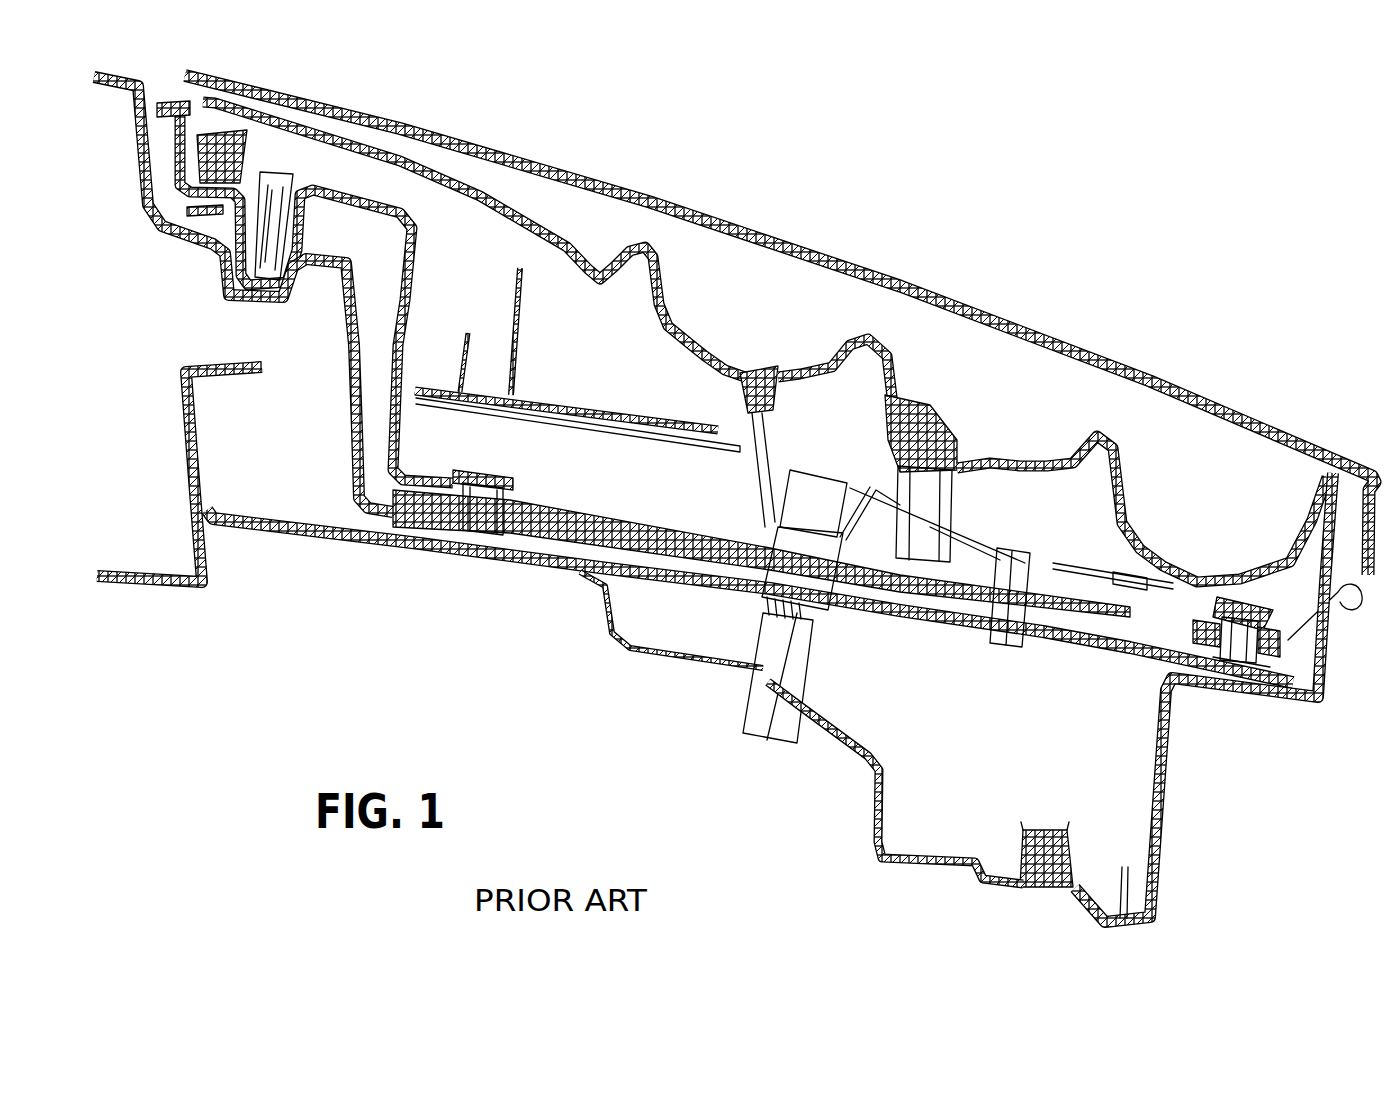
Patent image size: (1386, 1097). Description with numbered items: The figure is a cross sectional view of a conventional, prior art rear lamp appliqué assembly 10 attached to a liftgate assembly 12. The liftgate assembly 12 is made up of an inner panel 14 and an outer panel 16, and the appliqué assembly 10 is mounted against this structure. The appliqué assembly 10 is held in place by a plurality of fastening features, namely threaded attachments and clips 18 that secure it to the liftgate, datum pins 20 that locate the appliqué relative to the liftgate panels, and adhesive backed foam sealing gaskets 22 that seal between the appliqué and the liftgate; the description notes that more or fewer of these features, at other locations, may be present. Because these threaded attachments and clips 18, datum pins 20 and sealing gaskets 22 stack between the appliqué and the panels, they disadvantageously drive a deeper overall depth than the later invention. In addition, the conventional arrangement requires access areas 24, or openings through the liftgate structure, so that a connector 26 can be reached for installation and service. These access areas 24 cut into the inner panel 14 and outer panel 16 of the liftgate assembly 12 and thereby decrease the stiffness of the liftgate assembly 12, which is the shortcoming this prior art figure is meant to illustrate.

The rear lamp appliqué assembly 10 is at (1244, 332).
The liftgate assembly 12 is at (1212, 777).
The inner panel 14 is at (1140, 925).
The outer panel 16 is at (352, 434).
The threaded attachments and clips 18 is at (206, 212).
The datum pins 20 is at (547, 543).
The adhesive backed foam sealing gaskets 22 is at (683, 568).
The access areas 24 is at (463, 553).
The connector 26 is at (765, 742).